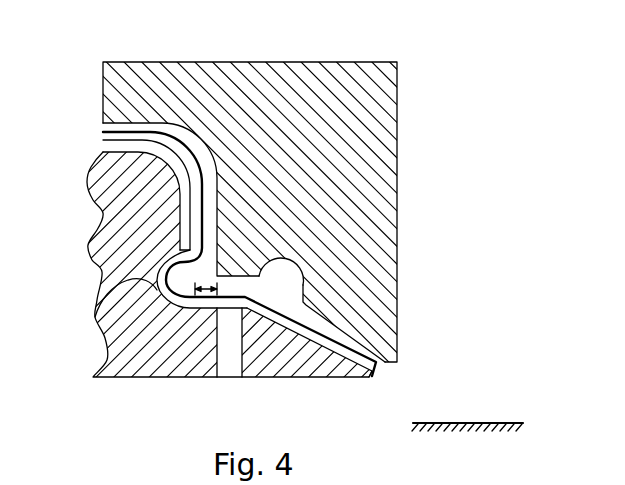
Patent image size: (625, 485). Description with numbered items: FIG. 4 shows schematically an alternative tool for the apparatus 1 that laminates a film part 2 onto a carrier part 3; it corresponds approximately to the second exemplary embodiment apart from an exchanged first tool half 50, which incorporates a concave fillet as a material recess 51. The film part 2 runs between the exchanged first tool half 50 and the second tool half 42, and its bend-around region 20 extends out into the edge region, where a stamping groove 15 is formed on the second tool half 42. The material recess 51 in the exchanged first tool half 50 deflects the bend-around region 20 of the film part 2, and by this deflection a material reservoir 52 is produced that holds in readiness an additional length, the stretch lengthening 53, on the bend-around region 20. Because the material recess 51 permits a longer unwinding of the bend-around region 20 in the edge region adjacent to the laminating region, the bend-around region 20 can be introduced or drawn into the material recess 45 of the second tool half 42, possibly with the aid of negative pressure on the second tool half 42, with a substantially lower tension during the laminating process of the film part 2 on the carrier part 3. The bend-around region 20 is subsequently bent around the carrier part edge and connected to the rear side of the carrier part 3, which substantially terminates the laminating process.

The apparatus 1 is at (504, 423).
The film part 2 is at (103, 131).
The carrier part 3 is at (102, 150).
The stamping groove 15 is at (234, 363).
The bend-around region 20 is at (345, 358).
The second tool half 42 is at (114, 330).
The material recess 45 is at (95, 302).
The exchanged first tool half 50 is at (373, 72).
The material recess 51 is at (299, 267).
The material reservoir 52 is at (286, 281).
The stretch lengthening 53 is at (206, 294).